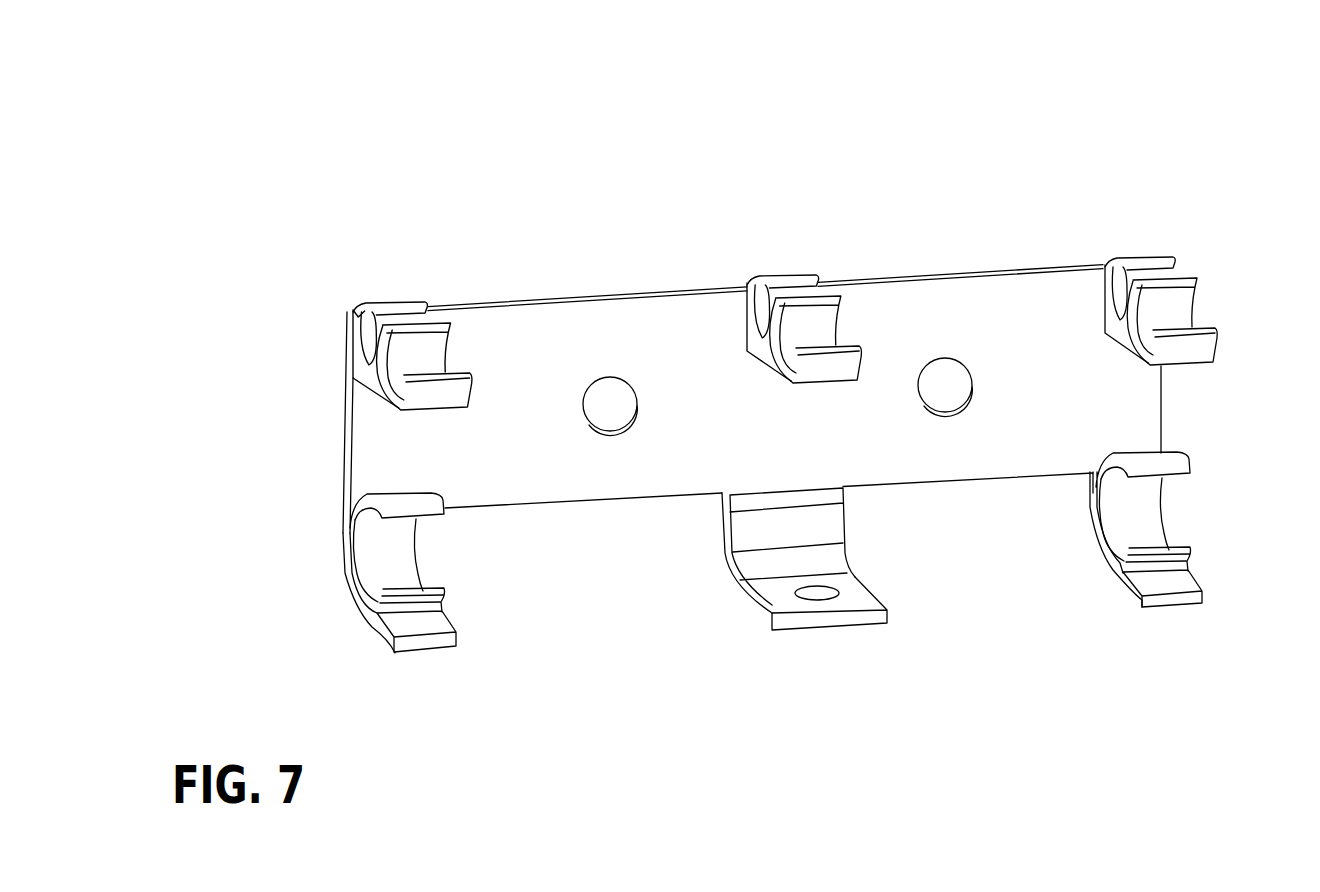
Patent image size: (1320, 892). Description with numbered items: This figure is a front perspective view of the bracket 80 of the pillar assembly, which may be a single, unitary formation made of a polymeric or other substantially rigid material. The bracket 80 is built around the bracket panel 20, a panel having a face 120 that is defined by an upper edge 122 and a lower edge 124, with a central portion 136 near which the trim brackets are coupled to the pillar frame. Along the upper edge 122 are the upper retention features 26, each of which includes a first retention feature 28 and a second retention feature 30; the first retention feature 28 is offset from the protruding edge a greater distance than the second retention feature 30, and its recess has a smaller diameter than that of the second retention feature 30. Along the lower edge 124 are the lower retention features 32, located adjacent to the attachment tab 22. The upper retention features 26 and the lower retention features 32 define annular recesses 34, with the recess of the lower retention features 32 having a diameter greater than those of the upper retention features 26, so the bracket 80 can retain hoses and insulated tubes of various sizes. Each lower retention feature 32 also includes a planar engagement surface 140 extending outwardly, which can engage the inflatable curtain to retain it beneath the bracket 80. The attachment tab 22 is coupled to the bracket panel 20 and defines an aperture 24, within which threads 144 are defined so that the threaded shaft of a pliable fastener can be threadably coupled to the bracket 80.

The bracket panel 20 is at (1027, 433).
The attachment tab 22 is at (760, 607).
The aperture 24 is at (813, 602).
The upper retention features 26 is at (357, 355).
The first retention feature 28 is at (363, 328).
The second retention feature 30 is at (390, 378).
The lower retention features 32 is at (355, 562).
The annular recesses 34 is at (375, 333).
The bracket 80 is at (1132, 160).
The face 120 is at (1107, 403).
The upper edge 122 is at (558, 298).
The lower edge 124 is at (508, 507).
The central portion 136 is at (343, 457).
The planar engagement surface 140 is at (423, 640).
The threads 144 is at (847, 603).